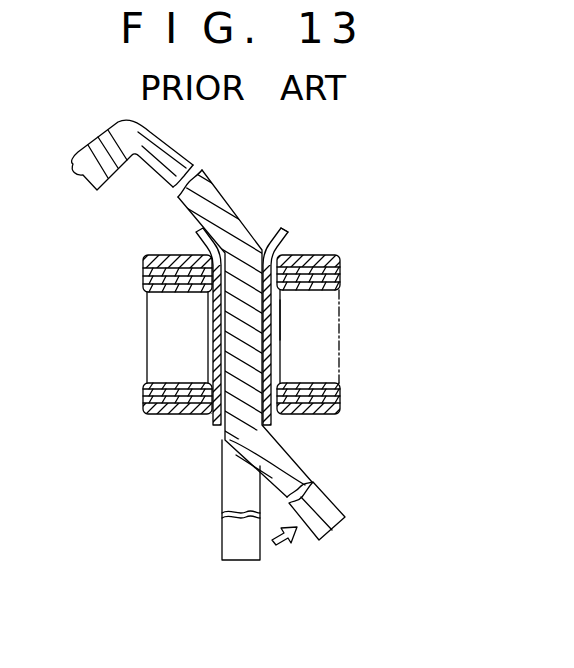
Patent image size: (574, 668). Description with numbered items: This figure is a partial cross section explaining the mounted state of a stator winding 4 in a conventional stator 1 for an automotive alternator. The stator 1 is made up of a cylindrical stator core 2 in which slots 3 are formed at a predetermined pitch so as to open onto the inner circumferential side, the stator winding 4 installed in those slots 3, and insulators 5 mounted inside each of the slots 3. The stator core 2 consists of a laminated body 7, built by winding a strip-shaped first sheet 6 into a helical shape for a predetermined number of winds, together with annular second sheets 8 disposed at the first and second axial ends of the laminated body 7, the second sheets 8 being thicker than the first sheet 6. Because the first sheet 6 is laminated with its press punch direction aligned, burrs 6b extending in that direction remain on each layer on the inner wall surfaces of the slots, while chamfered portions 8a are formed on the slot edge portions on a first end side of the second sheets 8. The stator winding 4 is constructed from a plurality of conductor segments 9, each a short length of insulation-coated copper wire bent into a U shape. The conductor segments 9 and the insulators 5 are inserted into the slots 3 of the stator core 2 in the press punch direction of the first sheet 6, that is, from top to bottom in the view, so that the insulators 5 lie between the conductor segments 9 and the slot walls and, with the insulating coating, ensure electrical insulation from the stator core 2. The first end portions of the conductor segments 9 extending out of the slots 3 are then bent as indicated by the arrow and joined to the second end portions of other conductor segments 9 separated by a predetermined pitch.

The stator 1 is at (337, 152).
The stator core 2 is at (352, 298).
The slots 3 is at (208, 413).
The stator winding 4 is at (189, 152).
The insulators 5 is at (213, 330).
The first sheet 6 is at (339, 321).
The burrs 6b is at (284, 299).
The laminated body 7 is at (343, 366).
The second sheets 8 is at (330, 258).
The chamfered portions 8a is at (285, 257).
The conductor segments 9 is at (208, 329).